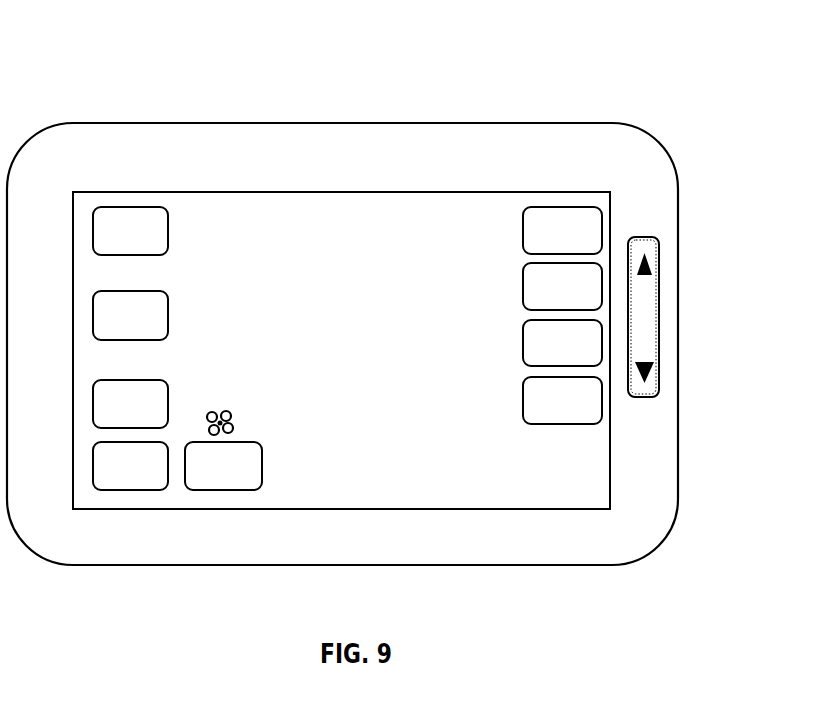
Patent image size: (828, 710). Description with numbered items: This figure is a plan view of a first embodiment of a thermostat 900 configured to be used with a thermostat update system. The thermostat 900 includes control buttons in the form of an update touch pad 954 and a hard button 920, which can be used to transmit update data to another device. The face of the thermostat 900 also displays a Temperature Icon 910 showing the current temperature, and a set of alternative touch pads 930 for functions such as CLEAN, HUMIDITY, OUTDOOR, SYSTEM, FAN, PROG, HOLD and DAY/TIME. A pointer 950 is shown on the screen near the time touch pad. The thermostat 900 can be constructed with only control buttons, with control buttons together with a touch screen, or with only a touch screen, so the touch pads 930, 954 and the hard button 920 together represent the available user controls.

The thermostat 900 is at (190, 111).
The Temperature Icon 910 is at (317, 227).
The alternative touch pads 930 is at (564, 226).
The update touch pad 954 is at (580, 273).
The hard button 920 is at (652, 328).
The cursor icon 950 is at (233, 428).